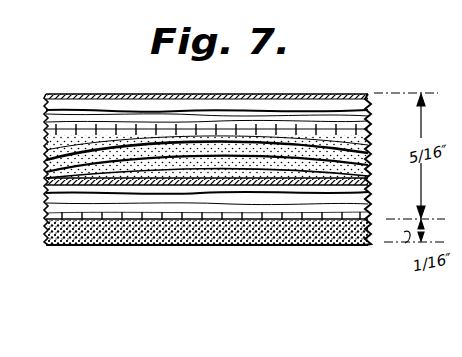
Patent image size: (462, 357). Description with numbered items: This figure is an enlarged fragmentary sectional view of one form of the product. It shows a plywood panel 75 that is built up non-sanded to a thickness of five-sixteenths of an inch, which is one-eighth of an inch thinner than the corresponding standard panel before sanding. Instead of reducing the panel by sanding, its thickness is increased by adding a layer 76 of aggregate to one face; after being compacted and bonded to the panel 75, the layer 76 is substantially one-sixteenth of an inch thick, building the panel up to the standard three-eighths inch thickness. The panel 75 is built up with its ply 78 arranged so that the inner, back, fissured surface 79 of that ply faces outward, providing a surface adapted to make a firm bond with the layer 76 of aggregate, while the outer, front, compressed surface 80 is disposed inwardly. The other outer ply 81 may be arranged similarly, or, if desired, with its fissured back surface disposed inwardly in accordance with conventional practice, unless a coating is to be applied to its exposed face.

The panel 75 is at (375, 218).
The layer of aggregate 76 is at (372, 234).
The ply 78 is at (182, 203).
The fissured surface 79 is at (254, 242).
The compressed surface 80 is at (311, 173).
The outer ply 81 is at (293, 108).